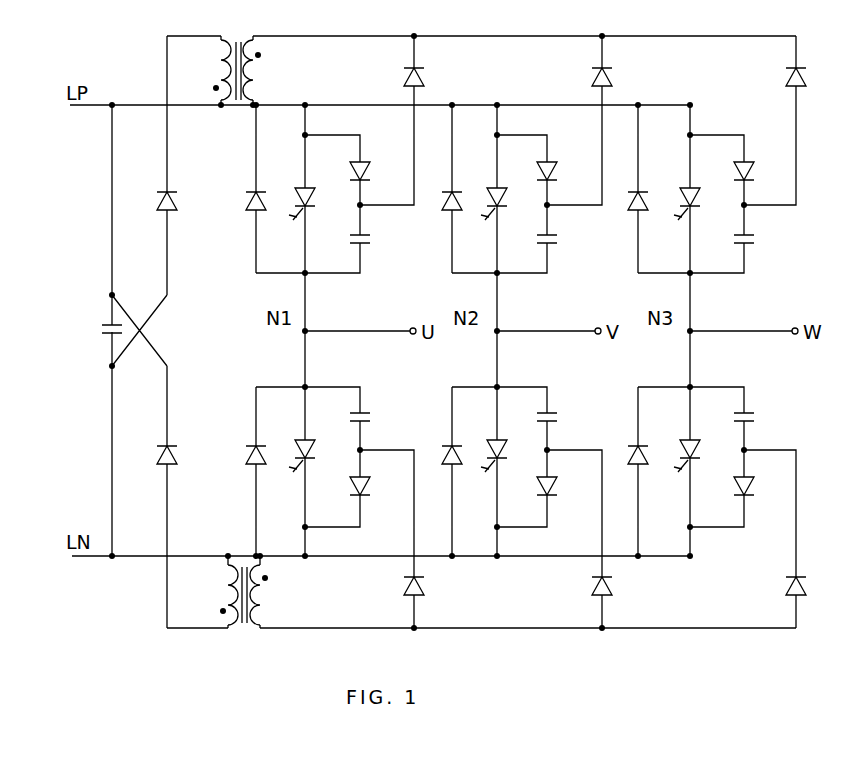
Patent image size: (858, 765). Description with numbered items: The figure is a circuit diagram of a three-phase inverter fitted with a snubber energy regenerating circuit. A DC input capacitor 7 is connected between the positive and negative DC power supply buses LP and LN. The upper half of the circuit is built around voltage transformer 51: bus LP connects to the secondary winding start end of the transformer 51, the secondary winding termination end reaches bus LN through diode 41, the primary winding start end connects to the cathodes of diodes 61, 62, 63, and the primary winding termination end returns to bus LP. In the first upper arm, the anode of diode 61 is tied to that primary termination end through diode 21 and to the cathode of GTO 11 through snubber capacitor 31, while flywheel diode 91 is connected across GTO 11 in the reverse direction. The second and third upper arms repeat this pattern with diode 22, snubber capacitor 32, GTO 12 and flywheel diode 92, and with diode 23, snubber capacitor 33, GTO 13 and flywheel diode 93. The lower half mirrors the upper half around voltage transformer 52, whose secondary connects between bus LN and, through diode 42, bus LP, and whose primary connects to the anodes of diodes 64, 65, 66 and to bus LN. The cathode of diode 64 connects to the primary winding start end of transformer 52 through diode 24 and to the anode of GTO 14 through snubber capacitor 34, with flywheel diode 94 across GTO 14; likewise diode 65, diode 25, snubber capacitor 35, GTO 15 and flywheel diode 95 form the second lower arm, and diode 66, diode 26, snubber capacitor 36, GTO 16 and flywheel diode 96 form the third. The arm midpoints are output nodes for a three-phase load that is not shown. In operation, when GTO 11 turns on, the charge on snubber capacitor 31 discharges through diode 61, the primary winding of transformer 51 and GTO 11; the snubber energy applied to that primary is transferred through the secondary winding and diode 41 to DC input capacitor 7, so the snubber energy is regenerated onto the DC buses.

The DC input capacitor 7 is at (100, 330).
The GTO 11 is at (302, 186).
The GTO 12 is at (494, 186).
The GTO 13 is at (687, 186).
The GTO 14 is at (302, 440).
The GTO 15 is at (494, 440).
The GTO 16 is at (687, 440).
The diode 21 is at (368, 170).
The diode 22 is at (555, 170).
The diode 23 is at (752, 170).
The diode 24 is at (368, 498).
The diode 25 is at (555, 498).
The diode 26 is at (752, 498).
The snubber capacitor 31 is at (368, 248).
The snubber capacitor 32 is at (555, 248).
The snubber capacitor 33 is at (752, 248).
The snubber capacitor 34 is at (368, 414).
The snubber capacitor 35 is at (555, 414).
The snubber capacitor 36 is at (752, 414).
The diode 41 is at (158, 212).
The diode 42 is at (158, 468).
The voltage transformer 51 is at (241, 42).
The voltage transformer 52 is at (245, 623).
The diode 61 is at (426, 70).
The diode 62 is at (614, 70).
The diode 63 is at (808, 70).
The diode 64 is at (425, 584).
The diode 65 is at (613, 584).
The diode 66 is at (808, 584).
The flywheel diode 91 is at (248, 210).
The flywheel diode 92 is at (444, 210).
The flywheel diode 93 is at (631, 210).
The flywheel diode 94 is at (250, 446).
The flywheel diode 95 is at (446, 446).
The flywheel diode 96 is at (632, 446).